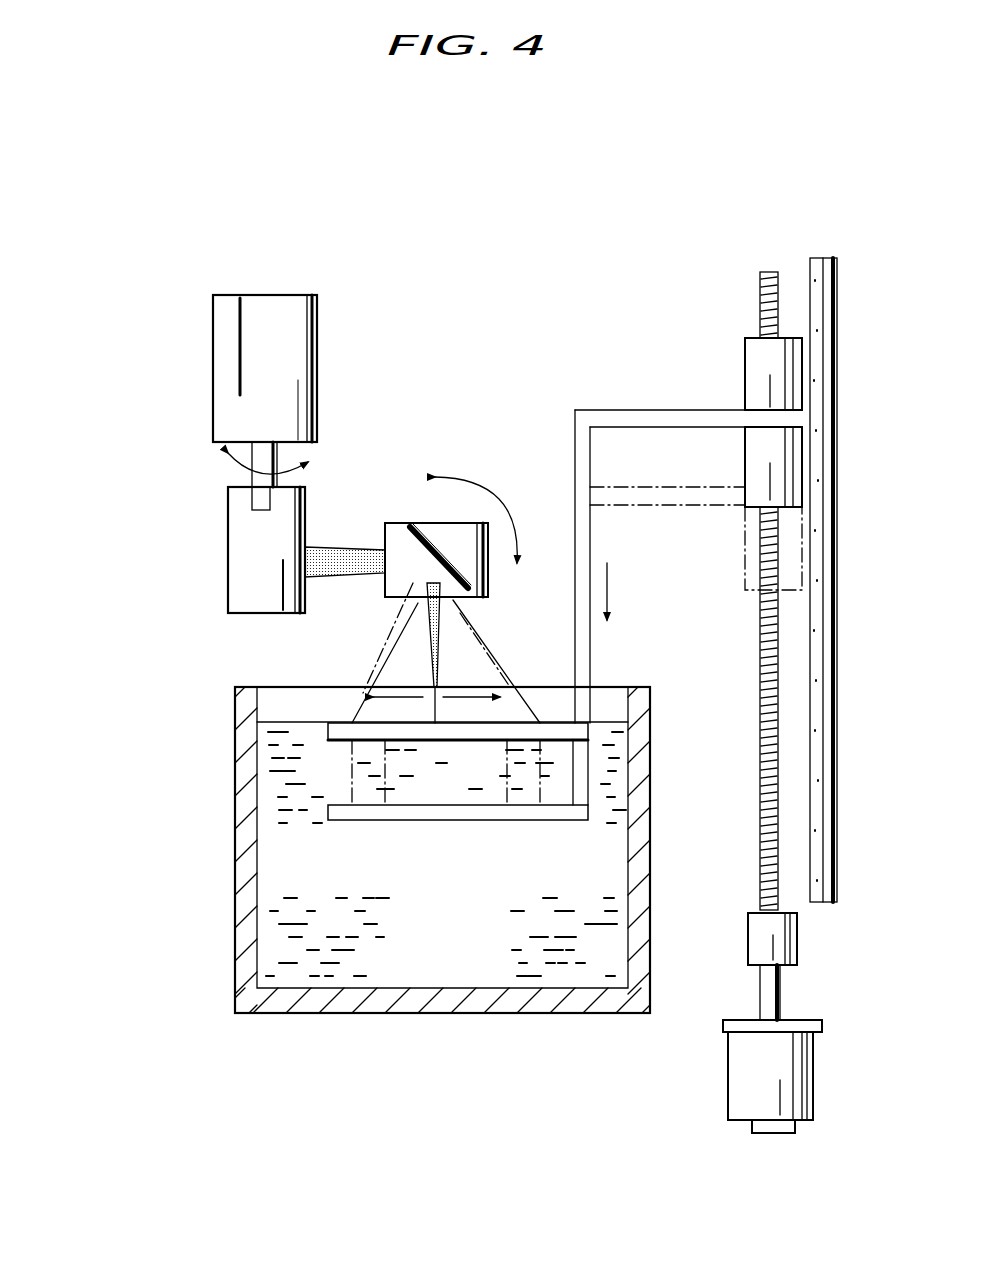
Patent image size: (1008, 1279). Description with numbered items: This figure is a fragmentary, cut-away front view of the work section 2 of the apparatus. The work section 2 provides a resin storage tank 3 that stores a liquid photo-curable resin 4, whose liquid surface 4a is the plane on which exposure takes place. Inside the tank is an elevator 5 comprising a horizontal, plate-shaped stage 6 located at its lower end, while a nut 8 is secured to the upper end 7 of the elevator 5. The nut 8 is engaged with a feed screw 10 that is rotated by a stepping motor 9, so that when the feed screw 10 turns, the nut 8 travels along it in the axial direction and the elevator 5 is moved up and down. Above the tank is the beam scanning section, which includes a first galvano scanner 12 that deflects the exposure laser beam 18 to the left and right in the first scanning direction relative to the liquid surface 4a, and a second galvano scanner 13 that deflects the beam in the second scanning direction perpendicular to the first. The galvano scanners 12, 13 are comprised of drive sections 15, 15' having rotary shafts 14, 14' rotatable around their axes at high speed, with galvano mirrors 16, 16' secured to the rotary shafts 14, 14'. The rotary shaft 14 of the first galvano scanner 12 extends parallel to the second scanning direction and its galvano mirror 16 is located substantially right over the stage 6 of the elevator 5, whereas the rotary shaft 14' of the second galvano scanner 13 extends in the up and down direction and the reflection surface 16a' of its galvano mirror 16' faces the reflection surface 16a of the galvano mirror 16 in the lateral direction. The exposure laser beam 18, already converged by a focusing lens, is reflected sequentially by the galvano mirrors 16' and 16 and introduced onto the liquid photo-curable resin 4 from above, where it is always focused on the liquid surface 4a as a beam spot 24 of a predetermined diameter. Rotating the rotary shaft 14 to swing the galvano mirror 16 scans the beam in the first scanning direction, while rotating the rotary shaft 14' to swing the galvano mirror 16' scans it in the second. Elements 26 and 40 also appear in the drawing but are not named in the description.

The work section 2 is at (213, 863).
The resin storage tank 3 is at (235, 975).
The liquid photo-curable resin 4 is at (340, 968).
The liquid surface 4a is at (278, 722).
The elevator 5 is at (593, 527).
The stage 6 is at (328, 728).
The upper end 7 is at (645, 410).
The nut 8 is at (755, 372).
The stepping motor 9 is at (813, 1063).
The feed screw 10 is at (760, 802).
The galvano scanner 12 is at (400, 525).
The galvano scanner 13 is at (317, 315).
The rotary shaft 14 is at (463, 508).
The rotary shaft 14' is at (307, 448).
The drive section 15 is at (507, 574).
The drive section 15' is at (209, 369).
The galvano mirror 16 is at (487, 558).
The galvano mirror 16' is at (213, 550).
The reflection surface 16a is at (355, 527).
The reflection surface 16a' is at (339, 616).
The exposure laser beam 18 is at (383, 637).
The beam spot 24 is at (457, 708).
The guide plate 26 is at (818, 258).
The support frame 40 is at (330, 768).